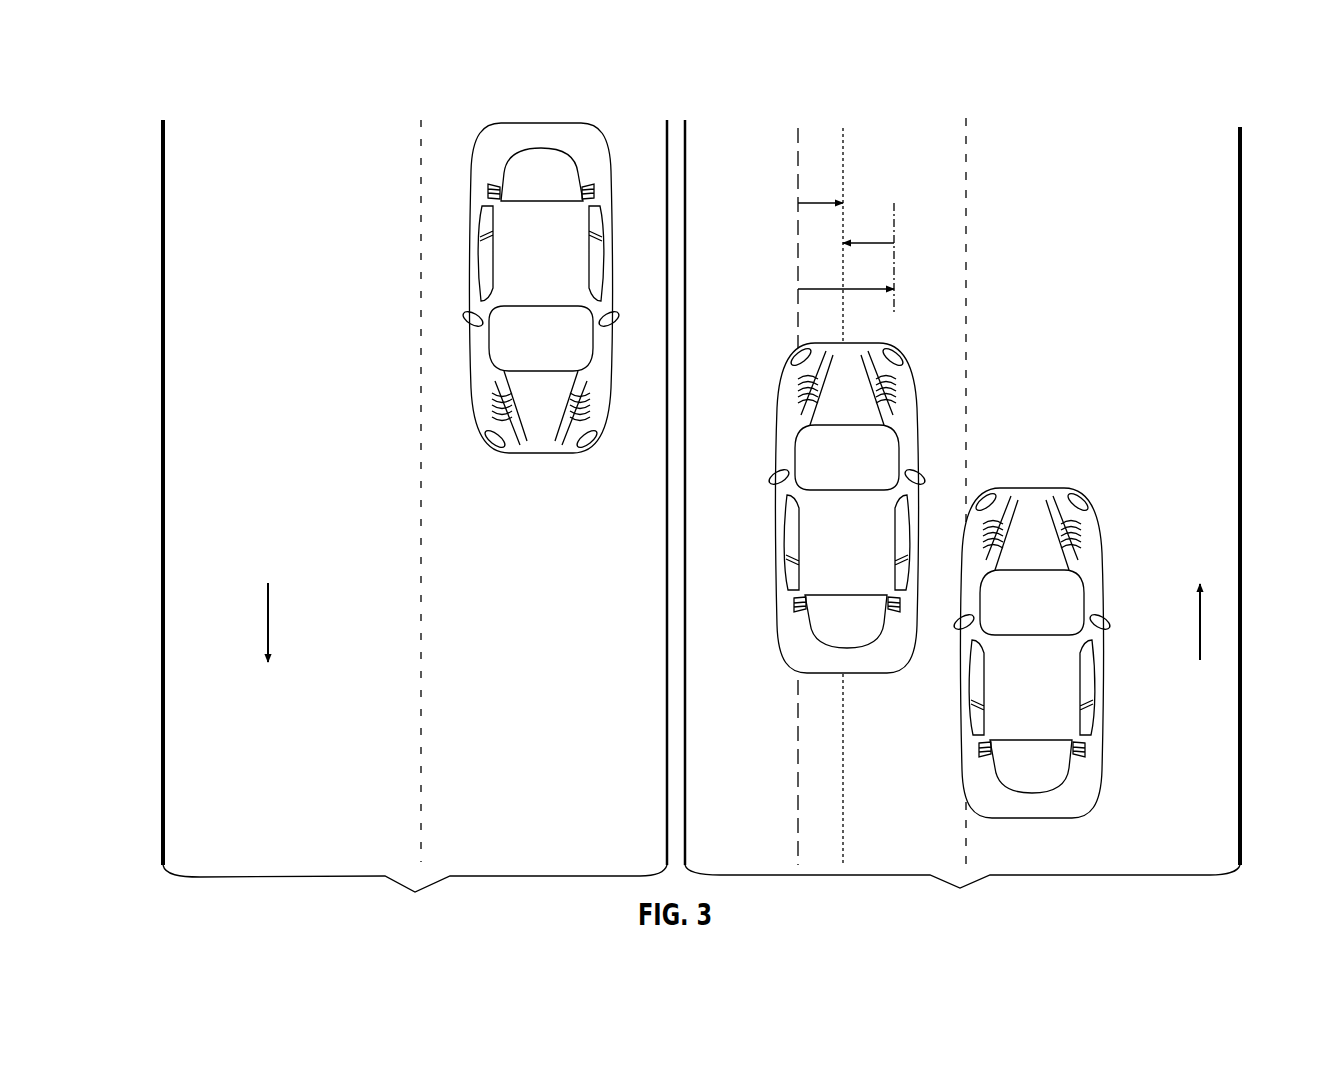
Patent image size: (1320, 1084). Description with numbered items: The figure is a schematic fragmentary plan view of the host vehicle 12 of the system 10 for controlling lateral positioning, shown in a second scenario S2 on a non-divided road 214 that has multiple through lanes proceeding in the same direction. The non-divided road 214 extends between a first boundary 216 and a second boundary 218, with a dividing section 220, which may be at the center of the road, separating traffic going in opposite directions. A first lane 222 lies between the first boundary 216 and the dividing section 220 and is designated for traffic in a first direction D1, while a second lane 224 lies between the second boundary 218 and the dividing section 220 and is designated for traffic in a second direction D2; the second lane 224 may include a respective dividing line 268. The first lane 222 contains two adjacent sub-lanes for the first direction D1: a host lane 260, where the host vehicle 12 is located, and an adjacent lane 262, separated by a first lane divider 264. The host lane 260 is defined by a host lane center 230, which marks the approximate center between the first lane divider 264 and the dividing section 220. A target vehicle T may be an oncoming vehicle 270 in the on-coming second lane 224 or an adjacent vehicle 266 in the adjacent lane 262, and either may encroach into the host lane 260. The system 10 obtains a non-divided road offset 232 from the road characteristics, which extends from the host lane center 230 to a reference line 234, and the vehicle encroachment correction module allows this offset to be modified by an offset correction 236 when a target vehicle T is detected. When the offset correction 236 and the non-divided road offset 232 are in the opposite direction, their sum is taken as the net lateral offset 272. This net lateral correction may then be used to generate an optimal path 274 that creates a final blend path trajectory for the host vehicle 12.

The system 10 is at (1096, 102).
The host vehicle 12 is at (772, 596).
The non-divided road 214 is at (736, 101).
The first boundary 216 is at (1240, 165).
The second boundary 218 is at (163, 713).
The dividing section 220 is at (667, 762).
The first lane 222 is at (830, 876).
The second lane 224 is at (283, 876).
The host lane center 230 is at (798, 768).
The non-divided road offset 232 is at (820, 290).
The reference line 234 is at (893, 258).
The offset correction 236 is at (868, 243).
The host lane 260 is at (752, 529).
The adjacent lane 262 is at (1125, 365).
The first lane divider 264 is at (967, 300).
The adjacent vehicle 266 is at (1052, 464).
The dividing line 268 is at (421, 308).
The oncoming vehicle 270 is at (496, 450).
The net lateral offset 272 is at (815, 203).
The optimal path 274 is at (843, 778).
The second scenario S2 is at (844, 102).
The first direction D1 is at (1200, 640).
The second direction D2 is at (266, 603).
The target vehicle T is at (578, 468).